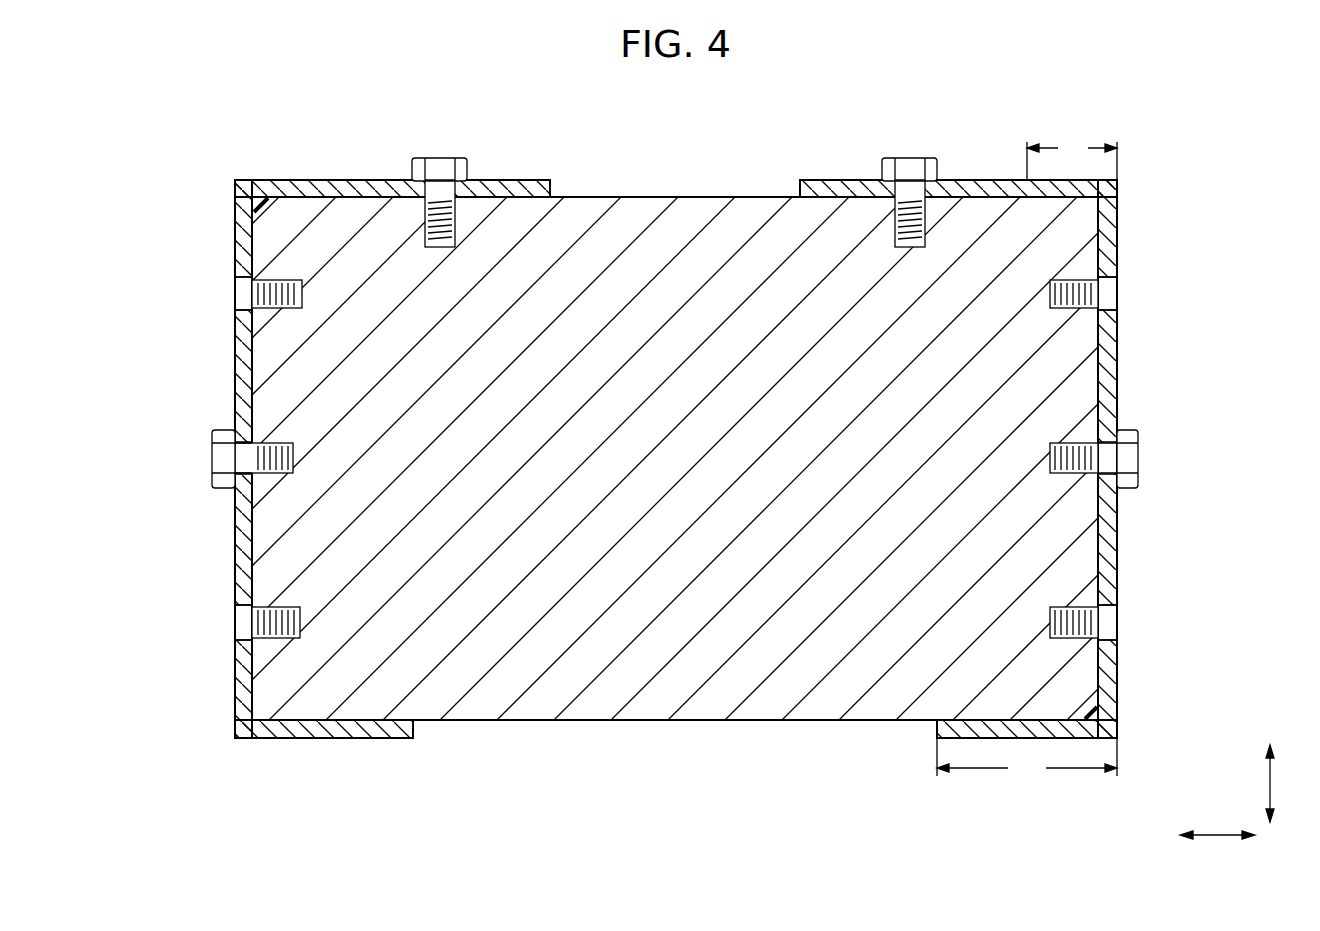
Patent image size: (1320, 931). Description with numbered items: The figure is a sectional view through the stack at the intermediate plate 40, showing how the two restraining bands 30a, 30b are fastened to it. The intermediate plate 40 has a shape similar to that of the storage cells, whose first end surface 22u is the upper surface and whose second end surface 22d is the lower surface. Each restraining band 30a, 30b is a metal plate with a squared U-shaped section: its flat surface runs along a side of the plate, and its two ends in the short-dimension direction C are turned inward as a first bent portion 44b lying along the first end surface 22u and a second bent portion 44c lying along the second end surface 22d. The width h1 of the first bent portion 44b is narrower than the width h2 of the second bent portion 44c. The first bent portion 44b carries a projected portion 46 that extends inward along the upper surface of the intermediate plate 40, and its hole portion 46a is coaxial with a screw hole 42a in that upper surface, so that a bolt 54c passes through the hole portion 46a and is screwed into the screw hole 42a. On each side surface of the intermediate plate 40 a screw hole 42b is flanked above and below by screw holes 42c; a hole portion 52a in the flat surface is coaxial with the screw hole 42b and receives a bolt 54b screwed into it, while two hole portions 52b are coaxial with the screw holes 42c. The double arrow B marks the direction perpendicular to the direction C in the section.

The first end surface 22u is at (690, 197).
The second end surface 22d is at (700, 722).
The restraining band 30a is at (1129, 195).
The restraining band 30b is at (226, 196).
The intermediate plate 40 is at (597, 192).
The screw hole 42a is at (441, 212).
The screw hole 42b is at (226, 452).
The screw hole 42c is at (262, 297).
The first bent portion 44b is at (292, 180).
The second bent portion 44c is at (311, 738).
The projected portion 46 is at (529, 180).
The hole portion 46a is at (446, 165).
The hole portion 52a is at (238, 461).
The hole portion 52b is at (243, 280).
The bolt 54b is at (213, 483).
The bolt 54c is at (420, 163).
The width of the first bent portion h1 is at (1072, 158).
The width of the second bent portion h2 is at (1027, 760).
The double arrow B is at (1217, 823).
The short-dimension direction C is at (1281, 783).